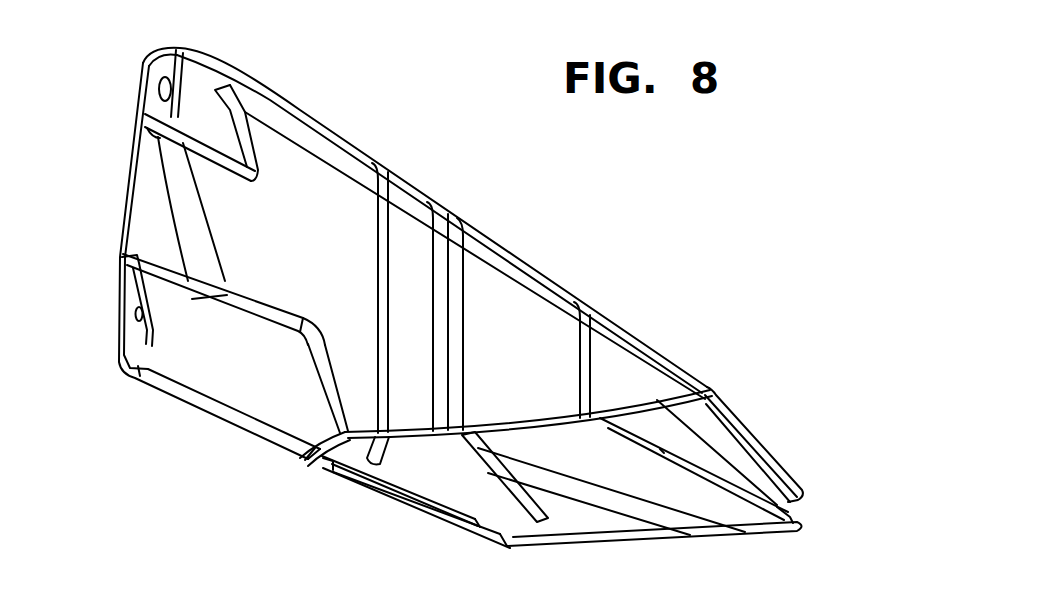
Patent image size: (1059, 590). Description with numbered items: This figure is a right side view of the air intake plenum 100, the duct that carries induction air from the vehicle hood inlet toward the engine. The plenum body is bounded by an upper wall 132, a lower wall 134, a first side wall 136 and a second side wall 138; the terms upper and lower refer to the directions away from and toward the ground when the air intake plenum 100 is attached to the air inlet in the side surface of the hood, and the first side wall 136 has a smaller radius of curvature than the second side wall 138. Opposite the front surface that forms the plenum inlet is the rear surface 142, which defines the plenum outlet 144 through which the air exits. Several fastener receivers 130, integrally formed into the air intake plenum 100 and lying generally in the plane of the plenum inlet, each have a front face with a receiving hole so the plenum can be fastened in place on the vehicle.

The air intake plenum 100 is at (512, 303).
The fastener receivers 130 is at (148, 108).
The upper wall 132 is at (257, 87).
The lower wall 134 is at (582, 524).
The first side wall 136 is at (717, 464).
The second side wall 138 is at (303, 253).
The rear surface 142 is at (732, 402).
The plenum outlet 144 is at (697, 525).